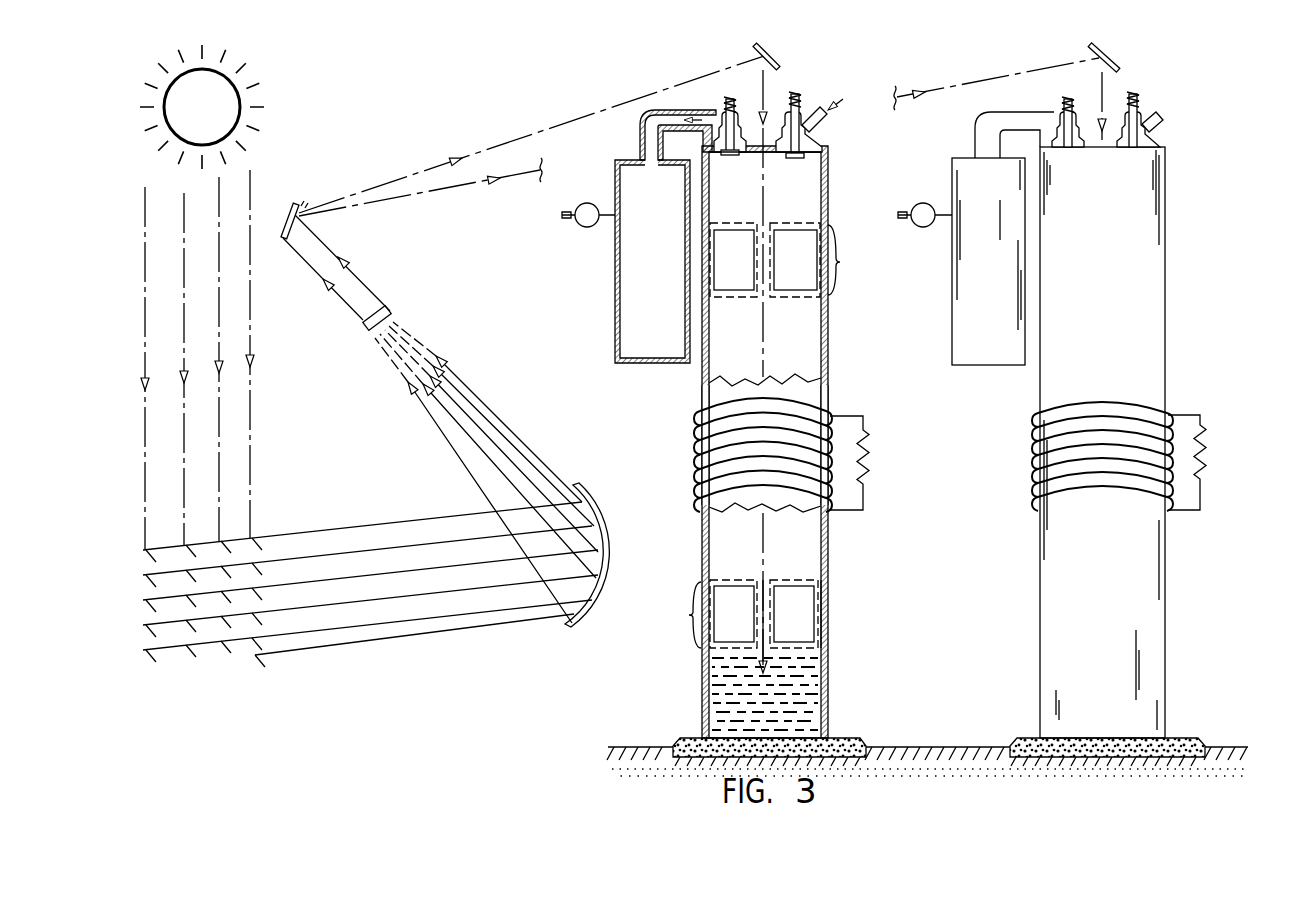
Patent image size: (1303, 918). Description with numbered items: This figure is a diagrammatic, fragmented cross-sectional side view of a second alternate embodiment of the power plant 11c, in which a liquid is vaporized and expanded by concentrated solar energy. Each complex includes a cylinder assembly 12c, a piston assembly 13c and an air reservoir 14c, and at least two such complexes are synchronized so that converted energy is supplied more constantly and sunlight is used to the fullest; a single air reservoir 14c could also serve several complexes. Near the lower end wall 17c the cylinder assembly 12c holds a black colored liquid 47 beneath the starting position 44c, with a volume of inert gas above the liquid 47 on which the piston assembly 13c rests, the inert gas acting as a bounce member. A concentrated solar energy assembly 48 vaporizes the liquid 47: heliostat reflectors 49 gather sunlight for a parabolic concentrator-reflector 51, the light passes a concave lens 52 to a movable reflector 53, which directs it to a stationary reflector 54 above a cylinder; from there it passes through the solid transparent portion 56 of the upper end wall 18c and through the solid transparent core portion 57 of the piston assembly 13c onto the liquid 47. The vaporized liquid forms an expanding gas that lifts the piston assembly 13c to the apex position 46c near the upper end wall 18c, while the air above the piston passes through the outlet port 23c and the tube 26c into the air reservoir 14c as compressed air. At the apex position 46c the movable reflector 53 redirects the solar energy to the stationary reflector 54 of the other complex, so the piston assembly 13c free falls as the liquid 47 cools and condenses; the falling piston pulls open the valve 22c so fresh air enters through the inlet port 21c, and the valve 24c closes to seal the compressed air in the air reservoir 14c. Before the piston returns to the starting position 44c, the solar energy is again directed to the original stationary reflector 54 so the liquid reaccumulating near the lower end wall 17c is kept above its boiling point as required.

The concentrated solar energy assembly 48 is at (146, 380).
The heliostat reflectors 49 is at (200, 595).
The parabolic concentrator-reflector 51 is at (594, 512).
The concave lens 52 is at (390, 313).
The movable reflector 53 is at (293, 208).
The stationary reflector 54 is at (756, 52).
The solid transparent portion of upper end wall 56 is at (766, 142).
The power plant 11c is at (909, 422).
The cylinder assembly 12c is at (834, 204).
The piston assembly 13c is at (828, 606).
The air reservoir 14c is at (611, 281).
The lower end wall 17c is at (750, 742).
The upper end wall 18c is at (824, 147).
The inlet port 21c is at (806, 154).
The valve 22c is at (969, 125).
The outlet port 23c is at (706, 150).
The valve 24c is at (726, 113).
The tube 26c is at (829, 116).
The starting position 44c is at (732, 614).
The apex position 46c is at (794, 260).
The black colored liquid 47 is at (797, 690).
The solid transparent core portion 57 is at (770, 598).